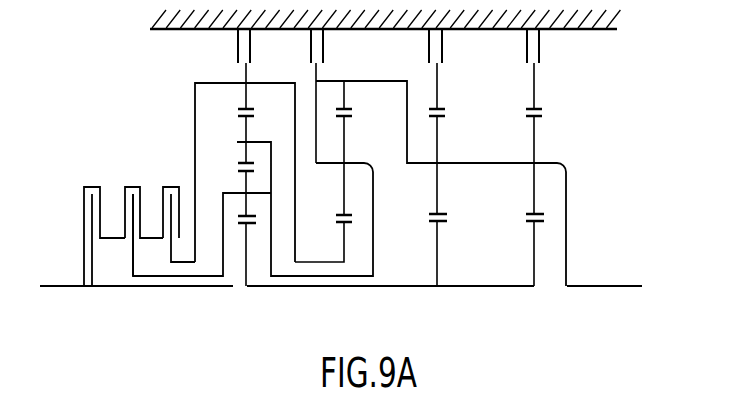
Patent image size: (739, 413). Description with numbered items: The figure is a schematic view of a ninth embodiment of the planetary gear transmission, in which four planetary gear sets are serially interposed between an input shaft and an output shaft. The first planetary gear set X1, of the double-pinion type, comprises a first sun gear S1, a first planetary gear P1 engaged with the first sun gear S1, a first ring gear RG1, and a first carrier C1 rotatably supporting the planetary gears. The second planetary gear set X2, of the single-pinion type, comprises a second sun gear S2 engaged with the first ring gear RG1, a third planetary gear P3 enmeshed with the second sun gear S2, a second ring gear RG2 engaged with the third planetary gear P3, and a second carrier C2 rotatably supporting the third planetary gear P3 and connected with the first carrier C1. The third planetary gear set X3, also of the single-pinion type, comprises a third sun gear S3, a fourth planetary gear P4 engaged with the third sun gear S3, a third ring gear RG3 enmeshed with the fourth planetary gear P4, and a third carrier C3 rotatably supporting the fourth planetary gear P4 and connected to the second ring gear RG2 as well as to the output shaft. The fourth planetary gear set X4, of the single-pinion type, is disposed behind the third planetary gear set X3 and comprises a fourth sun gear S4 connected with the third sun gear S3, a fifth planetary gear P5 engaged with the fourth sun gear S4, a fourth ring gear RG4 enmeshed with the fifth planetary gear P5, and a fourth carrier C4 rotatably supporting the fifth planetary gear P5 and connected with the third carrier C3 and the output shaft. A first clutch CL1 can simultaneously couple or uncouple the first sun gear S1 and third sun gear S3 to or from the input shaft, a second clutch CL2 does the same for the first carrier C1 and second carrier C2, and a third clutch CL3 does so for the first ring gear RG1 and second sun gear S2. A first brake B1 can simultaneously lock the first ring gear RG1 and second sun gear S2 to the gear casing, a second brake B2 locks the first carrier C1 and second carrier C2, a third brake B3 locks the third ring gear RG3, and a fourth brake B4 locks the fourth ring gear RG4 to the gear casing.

The first brake B1 is at (233, 48).
The second brake B2 is at (326, 49).
The third brake B3 is at (445, 48).
The fourth brake B4 is at (542, 47).
The first ring gear RG1 is at (247, 100).
The second ring gear RG2 is at (345, 99).
The third ring gear RG3 is at (438, 99).
The fourth ring gear RG4 is at (535, 99).
The first planetary gear P1 is at (244, 178).
The third planetary gear P3 is at (346, 140).
The fourth planetary gear P4 is at (438, 138).
The fifth planetary gear P5 is at (537, 138).
The first carrier C1 is at (250, 139).
The second carrier C2 is at (375, 172).
The third carrier C3 is at (466, 164).
The fourth carrier C4 is at (568, 177).
The first sun gear S1 is at (249, 233).
The second sun gear S2 is at (342, 243).
The third sun gear S3 is at (438, 243).
The fourth sun gear S4 is at (537, 243).
The first planetary gear set X1 is at (241, 234).
The second planetary gear set X2 is at (349, 234).
The third planetary gear set X3 is at (429, 234).
The fourth planetary gear set X4 is at (527, 234).
The first clutch CL1 is at (92, 183).
The second clutch CL2 is at (133, 183).
The third clutch CL3 is at (172, 183).